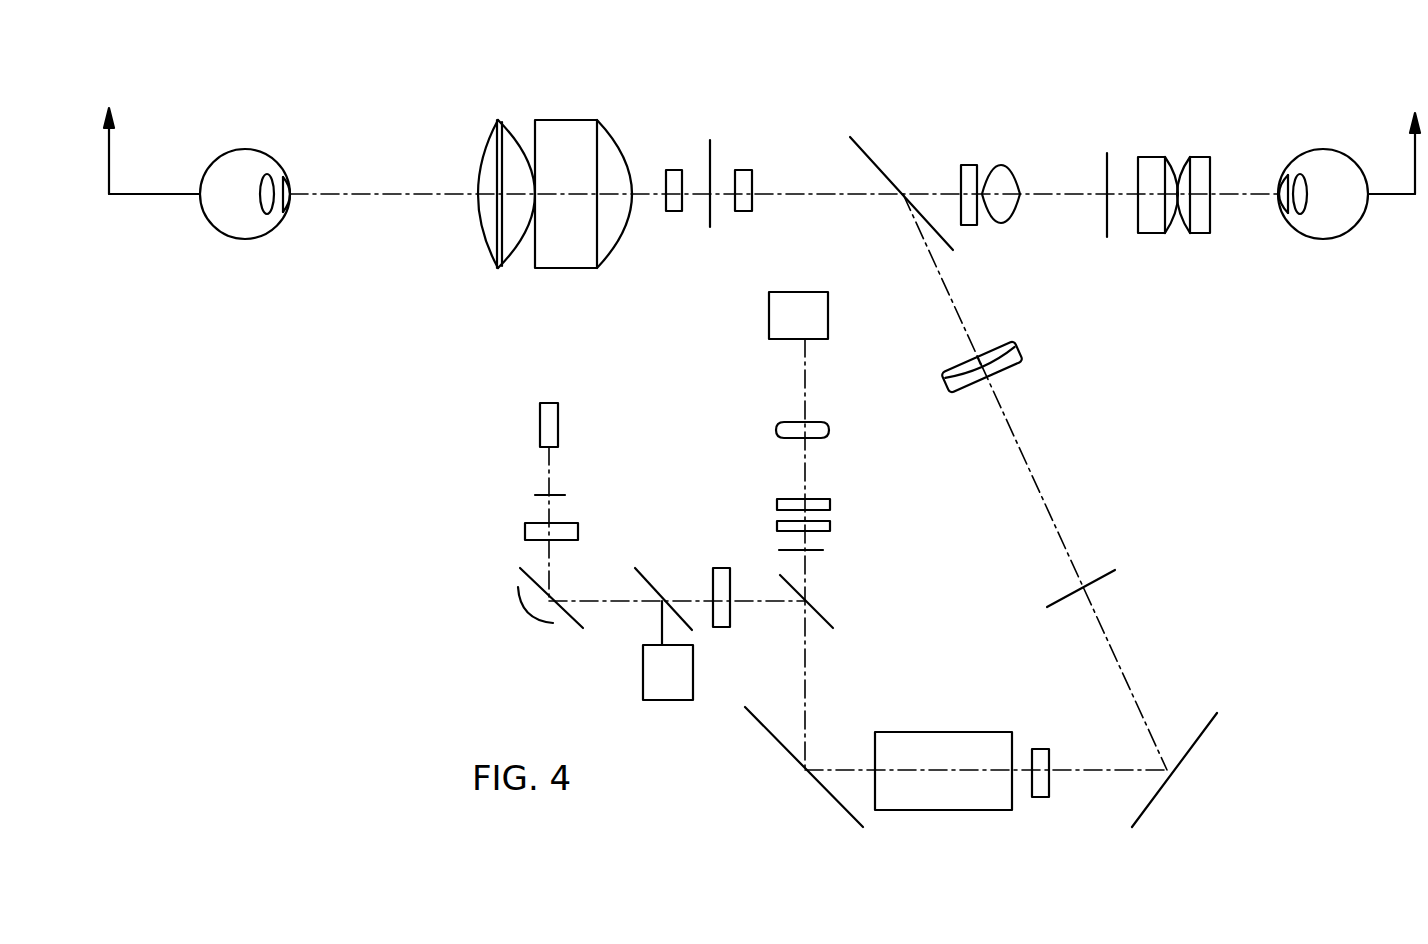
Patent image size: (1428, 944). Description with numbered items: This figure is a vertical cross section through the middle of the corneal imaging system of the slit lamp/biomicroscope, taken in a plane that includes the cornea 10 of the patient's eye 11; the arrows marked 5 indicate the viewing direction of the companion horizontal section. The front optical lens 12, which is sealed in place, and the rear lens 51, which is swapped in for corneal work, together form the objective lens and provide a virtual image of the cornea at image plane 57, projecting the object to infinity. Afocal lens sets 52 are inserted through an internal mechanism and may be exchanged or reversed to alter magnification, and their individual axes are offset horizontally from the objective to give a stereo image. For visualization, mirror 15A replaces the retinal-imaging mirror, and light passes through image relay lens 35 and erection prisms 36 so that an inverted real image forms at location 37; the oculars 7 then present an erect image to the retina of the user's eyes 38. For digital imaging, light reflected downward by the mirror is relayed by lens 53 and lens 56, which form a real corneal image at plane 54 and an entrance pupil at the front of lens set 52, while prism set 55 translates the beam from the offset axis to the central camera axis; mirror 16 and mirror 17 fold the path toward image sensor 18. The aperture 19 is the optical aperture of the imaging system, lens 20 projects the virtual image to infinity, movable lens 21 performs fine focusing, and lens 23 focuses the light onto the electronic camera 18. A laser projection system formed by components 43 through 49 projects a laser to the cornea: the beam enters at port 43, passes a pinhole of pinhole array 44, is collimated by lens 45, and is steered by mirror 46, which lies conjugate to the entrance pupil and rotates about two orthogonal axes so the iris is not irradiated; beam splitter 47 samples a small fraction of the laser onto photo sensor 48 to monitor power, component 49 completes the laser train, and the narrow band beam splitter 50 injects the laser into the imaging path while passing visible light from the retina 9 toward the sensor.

The section line arrow 5 is at (762, 132).
The retina 9 is at (208, 168).
The cornea 10 is at (285, 180).
The eye lens 11 is at (236, 225).
The optical lens 12 is at (483, 243).
The lens 51 is at (598, 120).
The lens sets 52 is at (750, 131).
The image plane 57 is at (711, 208).
The mirror 15A is at (882, 162).
The image relay lens 35 is at (972, 165).
The erection prisms 36 is at (1015, 173).
The inverted real image location 37 is at (1109, 155).
The lens sets (oculars) 7 is at (1210, 246).
The user's eyes 38 is at (1338, 238).
The image sensor 18 is at (830, 300).
The lens 23 is at (775, 430).
The lens 21 is at (829, 499).
The lens 20 is at (830, 524).
The aperture 19 is at (823, 550).
The narrow band optical beam splitter 50 is at (830, 618).
The port 43 is at (540, 429).
The pinhole array 44 is at (535, 494).
The lens 45 is at (525, 531).
The mirror 46 is at (572, 613).
The optical beam splitter 47 is at (652, 583).
The photo sensor 48 is at (694, 676).
The laser projection optical component 49 is at (723, 568).
The mirror 17 is at (830, 798).
The prism set 55 is at (988, 808).
The lens 56 is at (1040, 748).
The mirror 16 is at (1190, 752).
The plane 54 is at (1115, 570).
The lens 53 is at (1012, 370).